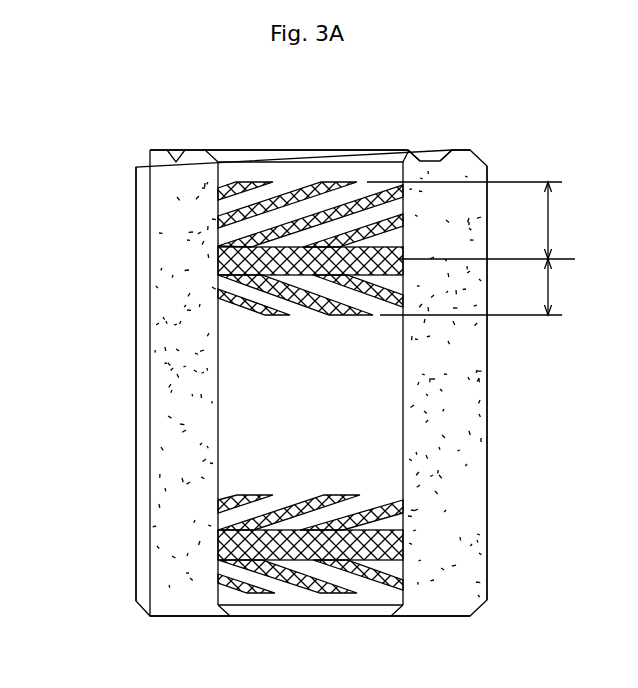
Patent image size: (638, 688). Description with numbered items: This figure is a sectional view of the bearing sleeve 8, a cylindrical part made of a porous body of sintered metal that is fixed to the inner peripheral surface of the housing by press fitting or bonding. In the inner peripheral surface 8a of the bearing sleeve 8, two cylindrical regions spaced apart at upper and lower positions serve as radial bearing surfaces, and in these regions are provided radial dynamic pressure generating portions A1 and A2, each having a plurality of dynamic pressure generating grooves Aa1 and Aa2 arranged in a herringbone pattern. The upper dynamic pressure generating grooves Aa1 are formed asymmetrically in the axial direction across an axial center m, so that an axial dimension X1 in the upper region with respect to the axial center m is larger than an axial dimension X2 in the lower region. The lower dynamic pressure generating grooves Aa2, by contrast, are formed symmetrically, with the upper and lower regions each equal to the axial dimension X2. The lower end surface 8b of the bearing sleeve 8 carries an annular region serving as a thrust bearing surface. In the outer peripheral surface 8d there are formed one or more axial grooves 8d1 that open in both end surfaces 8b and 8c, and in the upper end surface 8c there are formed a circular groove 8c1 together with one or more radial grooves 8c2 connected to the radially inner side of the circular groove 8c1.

The bearing sleeve 8 is at (105, 168).
The inner peripheral surface 8a is at (392, 398).
The lower end surface 8b is at (444, 618).
The upper end surface 8c is at (339, 128).
The circular groove 8c1 is at (446, 149).
The radial groove 8c2 is at (416, 148).
The outer peripheral surface 8d is at (139, 383).
The axial groove 8d1 is at (150, 433).
The upper dynamic pressure generating grooves Aa1 is at (242, 209).
The lower dynamic pressure generating grooves Aa2 is at (241, 511).
The radial dynamic pressure generating portion A1 is at (217, 243).
The radial dynamic pressure generating portion A2 is at (217, 550).
The axial dimension X1 is at (477, 220).
The axial dimension X2 is at (484, 287).
The axial center m is at (499, 260).